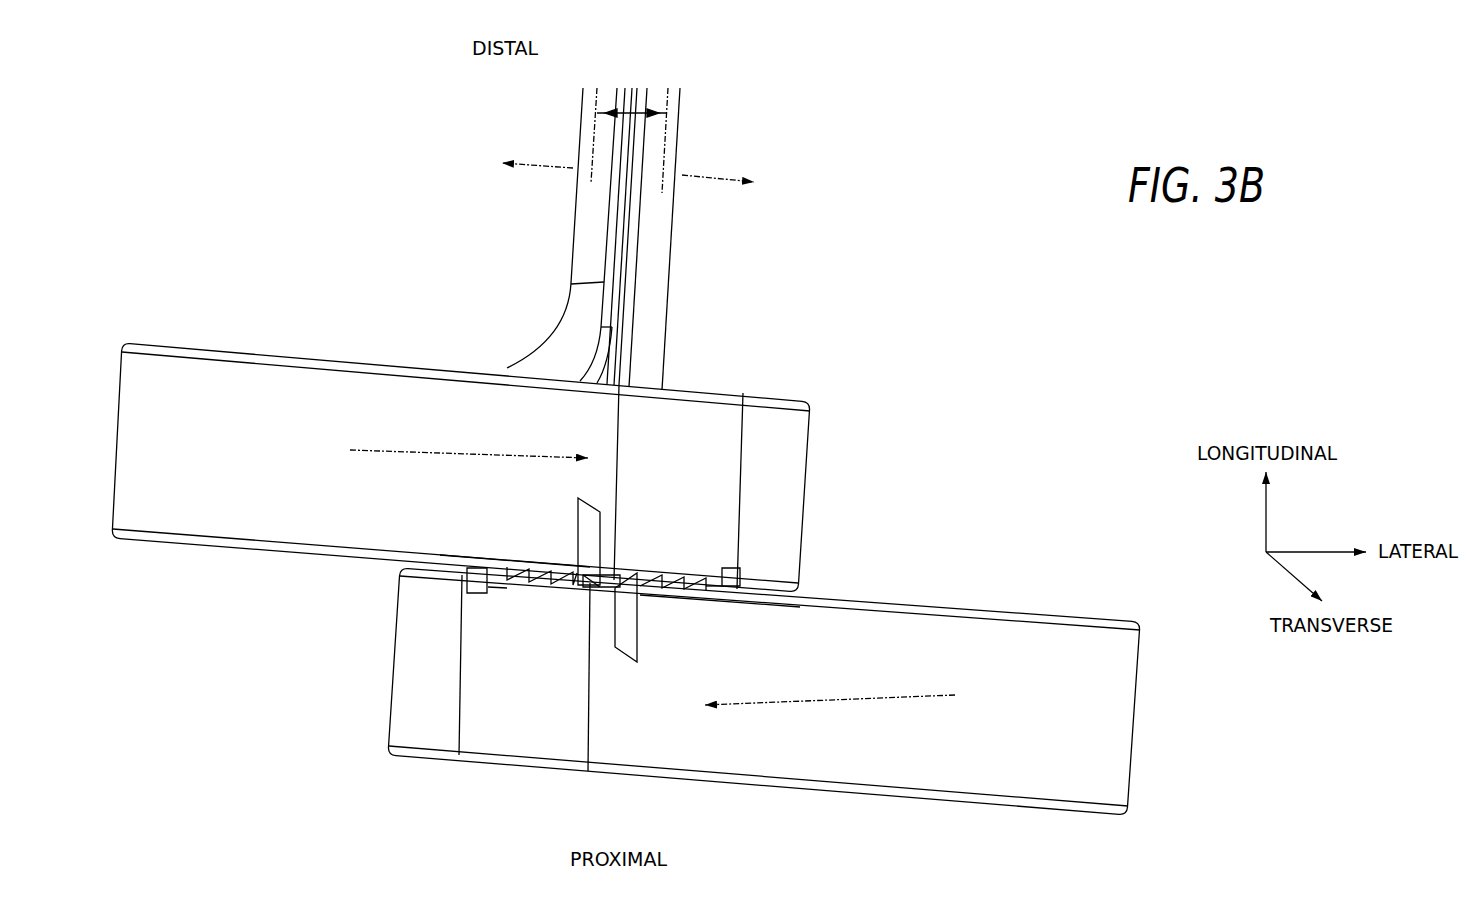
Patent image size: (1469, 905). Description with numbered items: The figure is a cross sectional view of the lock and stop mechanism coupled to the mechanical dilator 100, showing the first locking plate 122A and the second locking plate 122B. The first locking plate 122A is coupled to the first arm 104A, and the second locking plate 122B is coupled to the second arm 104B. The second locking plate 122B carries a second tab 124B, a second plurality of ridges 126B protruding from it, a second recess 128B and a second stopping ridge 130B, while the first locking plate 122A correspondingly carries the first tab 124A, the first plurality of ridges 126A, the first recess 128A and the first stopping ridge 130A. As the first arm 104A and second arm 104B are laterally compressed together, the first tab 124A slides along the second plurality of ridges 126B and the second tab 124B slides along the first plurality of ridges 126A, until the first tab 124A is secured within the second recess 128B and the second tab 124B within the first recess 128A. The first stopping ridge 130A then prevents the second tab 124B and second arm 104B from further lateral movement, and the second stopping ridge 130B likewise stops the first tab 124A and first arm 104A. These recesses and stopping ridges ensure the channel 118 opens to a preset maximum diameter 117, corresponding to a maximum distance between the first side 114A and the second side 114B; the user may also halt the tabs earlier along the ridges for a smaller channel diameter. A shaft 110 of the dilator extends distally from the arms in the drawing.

The mechanical dilator 100 is at (257, 600).
The first arm 104A is at (958, 615).
The second arm 104B is at (208, 353).
The shaft 110 is at (686, 322).
The first side 114A is at (657, 222).
The second side 114B is at (597, 230).
The maximum diameter 117 is at (633, 95).
The channel 118 is at (656, 73).
The first locking plate 122A is at (673, 600).
The second locking plate 122B is at (533, 557).
The first tab 124A is at (621, 570).
The second tab 124B is at (590, 593).
The first plurality of ridges 126A is at (710, 557).
The second plurality of ridges 126B is at (575, 600).
The first recess 128A is at (720, 560).
The second recess 128B is at (495, 592).
The first stopping ridge 130A is at (742, 567).
The second stopping ridge 130B is at (473, 596).